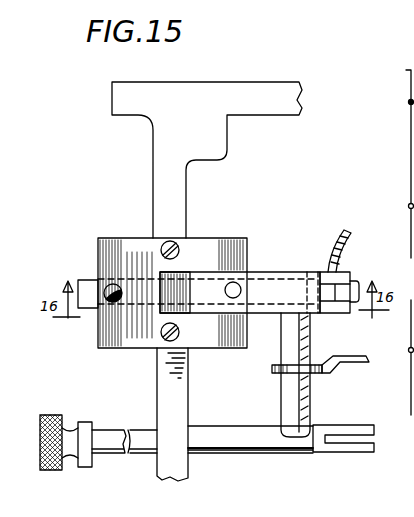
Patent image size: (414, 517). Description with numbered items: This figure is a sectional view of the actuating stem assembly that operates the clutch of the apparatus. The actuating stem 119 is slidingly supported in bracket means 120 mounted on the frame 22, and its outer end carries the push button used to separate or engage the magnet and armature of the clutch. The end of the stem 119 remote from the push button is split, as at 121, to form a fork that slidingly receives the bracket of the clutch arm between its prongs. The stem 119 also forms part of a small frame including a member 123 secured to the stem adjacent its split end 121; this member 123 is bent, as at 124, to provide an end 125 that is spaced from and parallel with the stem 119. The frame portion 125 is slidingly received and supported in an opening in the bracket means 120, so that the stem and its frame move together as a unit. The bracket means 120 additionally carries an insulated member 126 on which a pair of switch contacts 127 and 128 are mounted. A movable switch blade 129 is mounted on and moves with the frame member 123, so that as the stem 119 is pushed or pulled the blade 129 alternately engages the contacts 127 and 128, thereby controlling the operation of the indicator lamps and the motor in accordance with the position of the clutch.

The frame 22 is at (269, 86).
The bracket means 120 is at (186, 190).
The end of frame member 125 is at (50, 257).
The insulated member 126 is at (226, 240).
The switch contact 128 is at (240, 287).
The bend of frame member 124 is at (293, 272).
The switch contact 127 is at (110, 302).
The movable switch blade 129 is at (183, 337).
The frame member 123 is at (306, 350).
The actuating stem 119 is at (234, 454).
The split end 121 is at (338, 445).